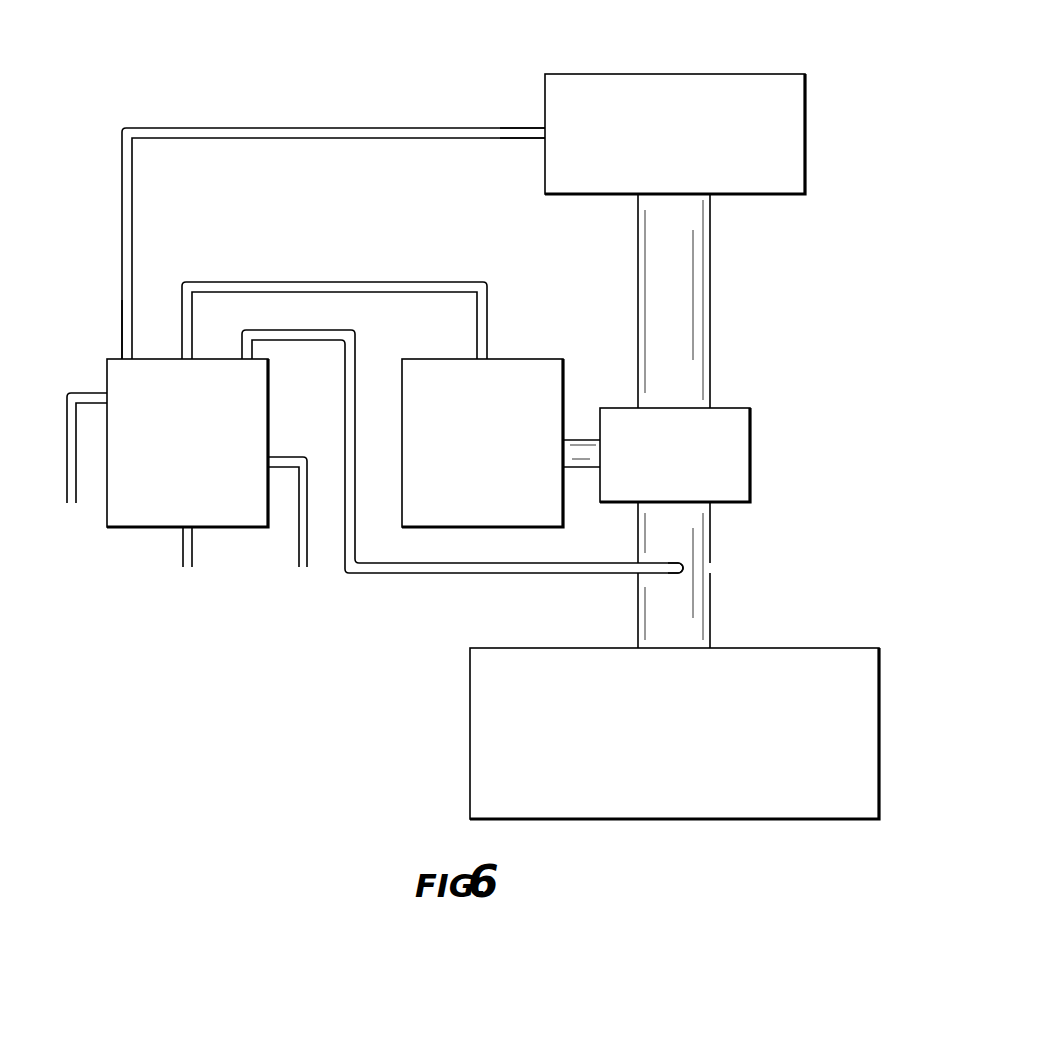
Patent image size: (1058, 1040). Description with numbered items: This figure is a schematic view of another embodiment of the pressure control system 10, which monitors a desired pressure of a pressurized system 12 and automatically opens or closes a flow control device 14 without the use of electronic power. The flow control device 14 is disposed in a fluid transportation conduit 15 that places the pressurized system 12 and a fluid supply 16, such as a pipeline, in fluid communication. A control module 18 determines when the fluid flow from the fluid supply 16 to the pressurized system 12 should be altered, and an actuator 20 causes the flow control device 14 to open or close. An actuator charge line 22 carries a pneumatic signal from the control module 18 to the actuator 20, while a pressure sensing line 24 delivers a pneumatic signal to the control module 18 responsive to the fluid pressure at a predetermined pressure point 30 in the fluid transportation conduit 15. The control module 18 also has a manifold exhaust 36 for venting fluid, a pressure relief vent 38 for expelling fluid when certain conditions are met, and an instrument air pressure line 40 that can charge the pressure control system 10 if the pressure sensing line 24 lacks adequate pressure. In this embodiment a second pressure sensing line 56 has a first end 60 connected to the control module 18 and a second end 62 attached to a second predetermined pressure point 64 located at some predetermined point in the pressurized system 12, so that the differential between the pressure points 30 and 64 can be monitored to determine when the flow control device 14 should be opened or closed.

The pressure control system 10 is at (364, 56).
The pressurized system 12 is at (806, 128).
The flow control device 14 is at (752, 450).
The fluid transportation conduit 15 is at (711, 322).
The fluid supply 16 is at (880, 672).
The control module 18 is at (120, 530).
The actuator 20 is at (535, 358).
The actuator charge line 22 is at (335, 282).
The pressure sensing line 24 is at (455, 572).
The predetermined pressure point 30 is at (681, 567).
The manifold exhaust 36 is at (193, 543).
The pressure relief vent 38 is at (308, 545).
The instrument air pressure line 40 is at (65, 471).
The second pressure sensing line 56 is at (283, 128).
The first end 60 is at (121, 334).
The second end 62 is at (531, 126).
The second predetermined pressure point 64 is at (538, 139).